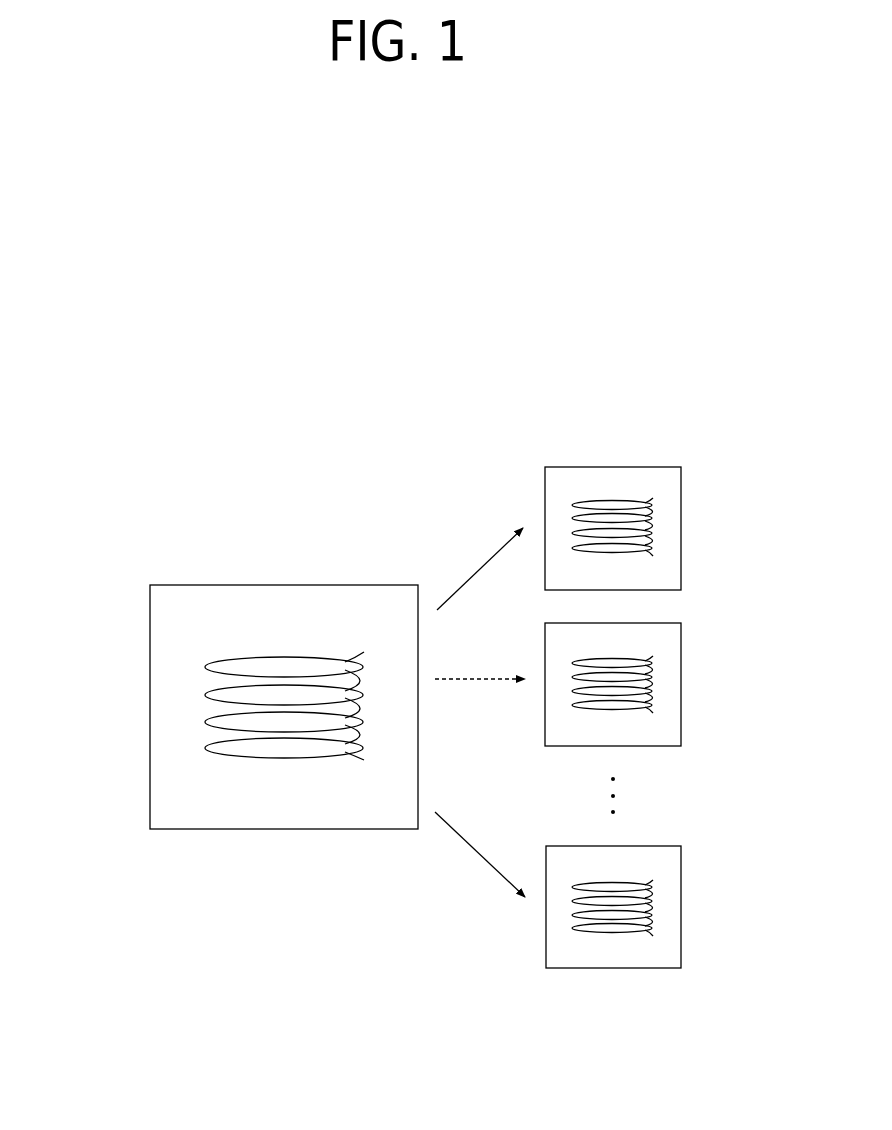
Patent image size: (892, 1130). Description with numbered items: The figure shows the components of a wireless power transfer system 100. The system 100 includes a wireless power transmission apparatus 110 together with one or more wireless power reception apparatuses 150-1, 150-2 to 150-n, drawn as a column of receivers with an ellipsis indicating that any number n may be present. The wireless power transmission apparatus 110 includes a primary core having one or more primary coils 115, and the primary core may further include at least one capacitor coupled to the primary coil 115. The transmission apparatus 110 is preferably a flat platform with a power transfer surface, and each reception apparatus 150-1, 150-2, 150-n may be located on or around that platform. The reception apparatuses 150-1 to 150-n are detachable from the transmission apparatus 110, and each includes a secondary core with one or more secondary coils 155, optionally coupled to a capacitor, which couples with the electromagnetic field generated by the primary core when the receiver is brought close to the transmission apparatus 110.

The wireless power transfer system 100 is at (166, 462).
The wireless power transmission apparatus 110 is at (283, 585).
The primary coil 115 is at (287, 757).
The wireless power reception apparatus 150-1 is at (681, 525).
The wireless power reception apparatus 150-2 is at (681, 683).
The wireless power reception apparatus 150-n is at (681, 906).
The secondary coil 155 is at (612, 502).